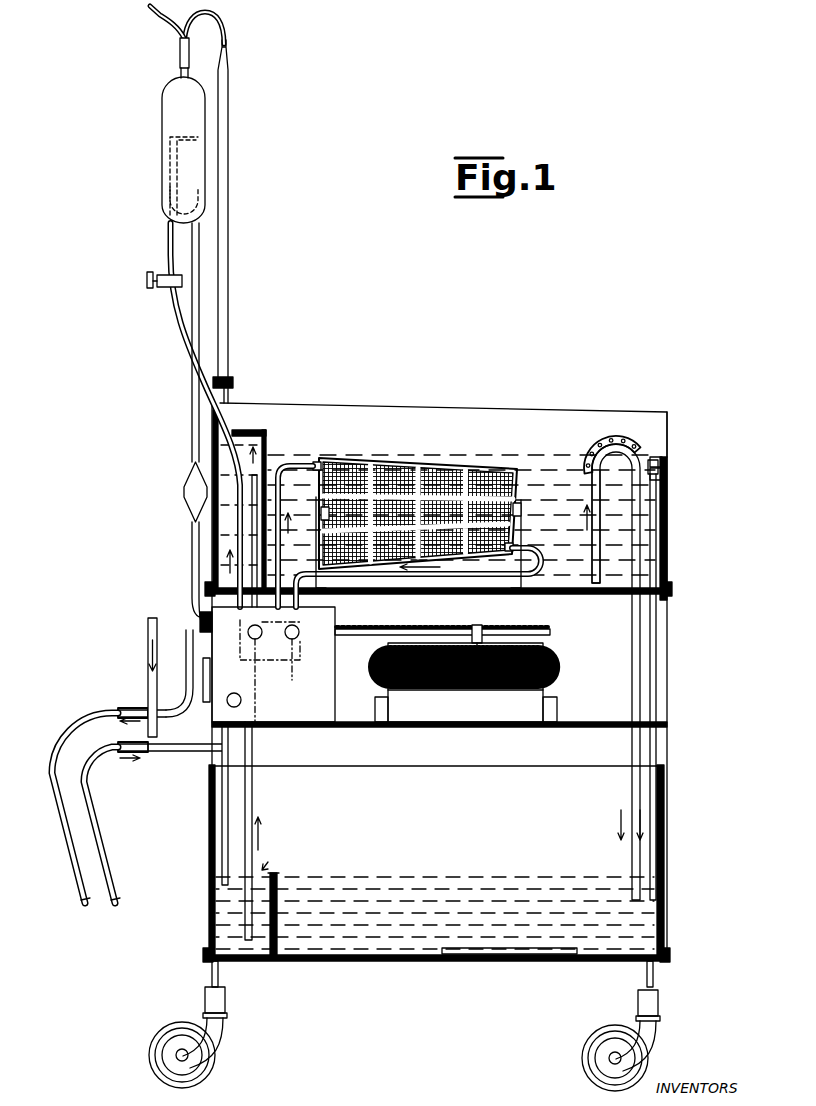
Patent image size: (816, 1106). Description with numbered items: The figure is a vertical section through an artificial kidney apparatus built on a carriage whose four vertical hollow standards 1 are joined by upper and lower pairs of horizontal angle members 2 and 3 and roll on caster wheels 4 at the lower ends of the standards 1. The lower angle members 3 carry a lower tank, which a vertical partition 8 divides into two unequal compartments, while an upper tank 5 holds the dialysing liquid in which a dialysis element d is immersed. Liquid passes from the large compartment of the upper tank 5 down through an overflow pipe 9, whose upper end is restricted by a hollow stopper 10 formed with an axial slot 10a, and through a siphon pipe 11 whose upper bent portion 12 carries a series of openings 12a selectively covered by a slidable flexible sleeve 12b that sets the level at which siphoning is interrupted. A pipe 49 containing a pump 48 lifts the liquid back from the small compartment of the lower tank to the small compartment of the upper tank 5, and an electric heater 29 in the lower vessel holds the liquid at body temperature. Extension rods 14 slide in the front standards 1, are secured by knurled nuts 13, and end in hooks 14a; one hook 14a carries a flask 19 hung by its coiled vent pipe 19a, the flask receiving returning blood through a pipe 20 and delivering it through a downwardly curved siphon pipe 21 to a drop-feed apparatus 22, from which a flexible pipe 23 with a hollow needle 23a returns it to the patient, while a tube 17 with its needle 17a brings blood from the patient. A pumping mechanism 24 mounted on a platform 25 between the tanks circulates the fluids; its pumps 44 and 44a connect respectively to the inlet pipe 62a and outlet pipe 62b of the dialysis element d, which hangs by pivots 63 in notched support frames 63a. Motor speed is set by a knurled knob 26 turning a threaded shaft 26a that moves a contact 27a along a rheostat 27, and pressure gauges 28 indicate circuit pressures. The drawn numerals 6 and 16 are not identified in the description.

The vertical tube or standard 1 is at (228, 397).
The horizontal angle member 2 is at (210, 590).
The lower horizontal angle member 3 is at (205, 952).
The caster wheel 4 is at (178, 1025).
The upper tank 5 is at (464, 412).
The pump compartment 6 is at (284, 433).
The vertical partition 8 is at (277, 878).
The overflow pipe 9 is at (657, 658).
The hollow stopper 10 is at (663, 460).
The elongated opening or slot 10a is at (663, 476).
The siphon pipe 11 is at (631, 650).
The upper bent portion 12 is at (641, 452).
The longitudinally spaced openings 12a is at (592, 455).
The flexible sleeve 12b is at (610, 446).
The knurled nut 13 is at (233, 380).
The extension rod 14 is at (229, 165).
The hooked portion 14a is at (172, 30).
The inlet tube 16 is at (148, 625).
The tube taking blood from the patient 17 is at (125, 746).
The hollow needle 17a is at (120, 895).
The flask 19 is at (163, 107).
The vent pipe 19a is at (180, 58).
The pipe 20 is at (170, 141).
The pipe 21 is at (175, 190).
The drop-feed apparatus 22 is at (183, 490).
The flexible pipe 23 is at (128, 712).
The hollow needle 23a is at (84, 902).
The pumping mechanism 24 is at (335, 670).
The platform or table 25 is at (455, 727).
The knurled knob 26 is at (200, 620).
The threaded shaft 26a is at (420, 629).
The rheostat 27 is at (470, 695).
The contact 27a is at (482, 630).
The pressure gauge 28 is at (205, 698).
The electric heater 29 is at (518, 955).
The pump 44 is at (234, 693).
The pump 44a is at (305, 628).
The pump 48 is at (268, 628).
The pipe 49 is at (252, 775).
The inlet pipe 62a is at (300, 466).
The outlet pipe 62b is at (540, 578).
The pivot 63 is at (316, 540).
The support frame 63a is at (523, 525).
The dialysis element d is at (400, 470).